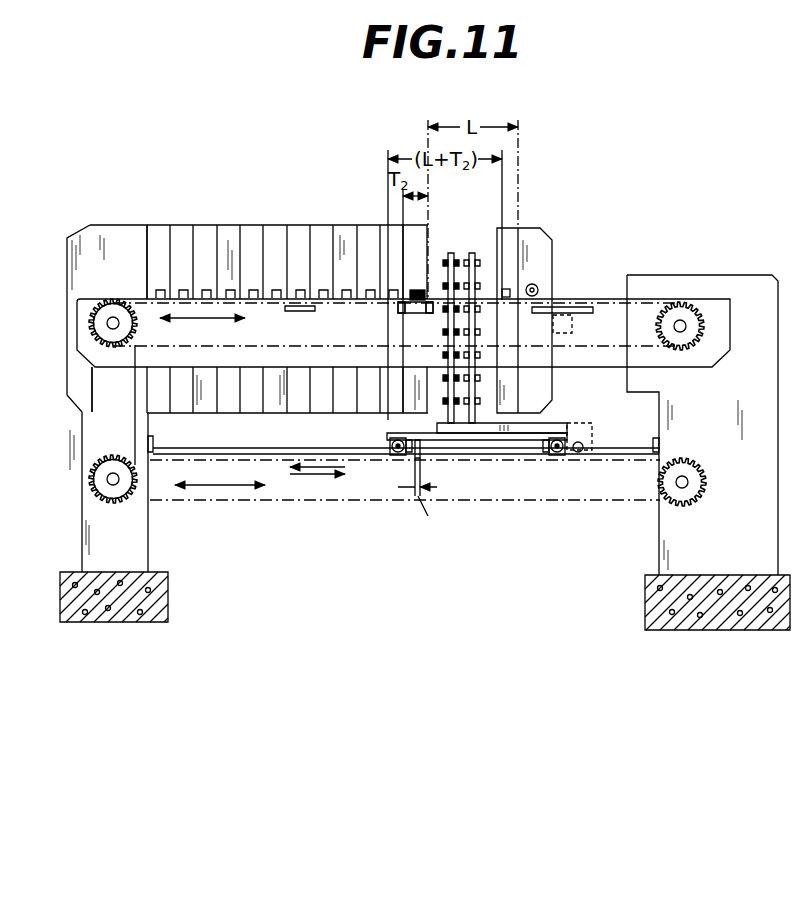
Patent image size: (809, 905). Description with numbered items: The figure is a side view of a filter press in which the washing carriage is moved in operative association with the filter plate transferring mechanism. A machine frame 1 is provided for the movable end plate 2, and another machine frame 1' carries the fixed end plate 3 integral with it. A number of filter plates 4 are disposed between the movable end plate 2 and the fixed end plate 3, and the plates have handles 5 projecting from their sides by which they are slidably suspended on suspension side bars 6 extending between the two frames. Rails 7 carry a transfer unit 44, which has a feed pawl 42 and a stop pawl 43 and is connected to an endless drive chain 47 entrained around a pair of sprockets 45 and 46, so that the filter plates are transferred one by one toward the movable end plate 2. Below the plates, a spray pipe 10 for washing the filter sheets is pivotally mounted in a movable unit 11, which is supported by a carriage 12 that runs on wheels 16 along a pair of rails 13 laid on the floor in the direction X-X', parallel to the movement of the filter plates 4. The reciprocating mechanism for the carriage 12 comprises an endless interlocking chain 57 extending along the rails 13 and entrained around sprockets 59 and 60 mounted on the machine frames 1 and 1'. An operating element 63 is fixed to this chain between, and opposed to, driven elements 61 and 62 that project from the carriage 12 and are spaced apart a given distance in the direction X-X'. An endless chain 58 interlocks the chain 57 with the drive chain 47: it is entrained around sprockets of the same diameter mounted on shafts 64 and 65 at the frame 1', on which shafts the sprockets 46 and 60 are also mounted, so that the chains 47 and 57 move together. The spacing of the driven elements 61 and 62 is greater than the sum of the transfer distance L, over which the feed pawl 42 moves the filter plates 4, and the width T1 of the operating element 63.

The machine frame 1 is at (714, 452).
The machine frame 1' is at (114, 423).
The movable end plate 2 is at (548, 232).
The fixed end plate 3 is at (118, 238).
The filter plates 4 is at (255, 232).
The handles 5 is at (160, 290).
The suspension side bars 6 is at (302, 342).
The rails 7 is at (302, 306).
The spray pipe 10 is at (453, 253).
The movable unit 11 is at (560, 428).
The carriage 12 is at (387, 434).
The rails 13 is at (230, 448).
The wheels 16 is at (390, 446).
The feed pawl 42 is at (400, 303).
The stop pawl 43 is at (432, 302).
The transfer unit 44 is at (420, 313).
The sprocket 45 is at (683, 335).
The sprocket 46 is at (104, 306).
The endless drive chain 47 is at (183, 345).
The endless interlocking chain 57 is at (283, 503).
The endless chain 58 is at (92, 425).
The sprocket 59 is at (690, 496).
The sprocket 60 is at (113, 490).
The driven element 61 is at (530, 432).
The driven element 62 is at (415, 455).
The operating element 63 is at (424, 454).
The shaft 64 is at (113, 323).
The shaft 65 is at (113, 479).